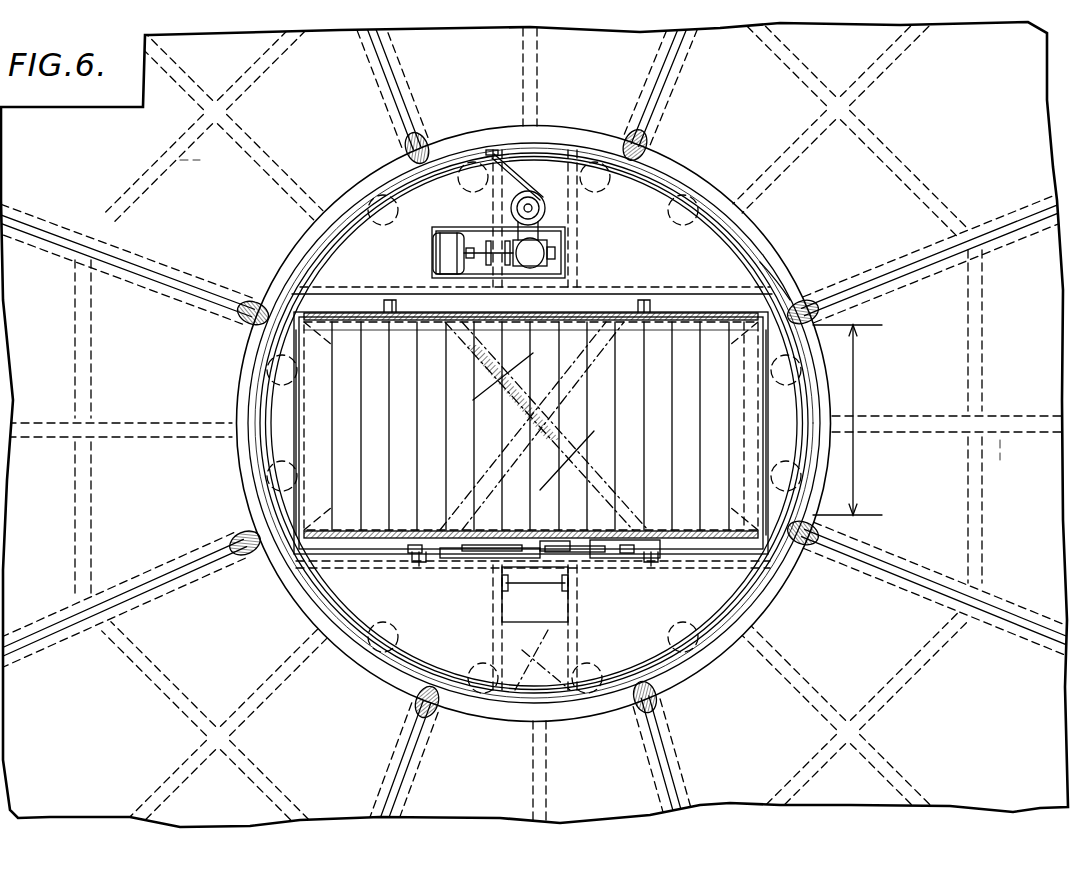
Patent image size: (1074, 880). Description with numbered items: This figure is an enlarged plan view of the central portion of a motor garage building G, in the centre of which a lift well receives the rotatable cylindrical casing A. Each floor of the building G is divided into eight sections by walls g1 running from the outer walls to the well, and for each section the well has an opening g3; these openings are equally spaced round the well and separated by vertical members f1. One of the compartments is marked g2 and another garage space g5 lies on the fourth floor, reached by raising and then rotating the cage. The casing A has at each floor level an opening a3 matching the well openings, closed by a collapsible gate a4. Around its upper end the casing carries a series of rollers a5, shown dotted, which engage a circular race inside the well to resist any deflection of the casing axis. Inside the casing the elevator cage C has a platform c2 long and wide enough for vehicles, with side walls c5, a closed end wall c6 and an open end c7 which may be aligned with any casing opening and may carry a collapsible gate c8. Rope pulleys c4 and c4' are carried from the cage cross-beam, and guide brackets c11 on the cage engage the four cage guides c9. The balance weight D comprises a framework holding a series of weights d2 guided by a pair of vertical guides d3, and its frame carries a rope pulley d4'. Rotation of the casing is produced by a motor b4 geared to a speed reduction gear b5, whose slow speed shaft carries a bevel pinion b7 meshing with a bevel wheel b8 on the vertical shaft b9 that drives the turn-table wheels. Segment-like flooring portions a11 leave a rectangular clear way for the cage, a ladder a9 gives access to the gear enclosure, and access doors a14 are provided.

The casing A is at (716, 630).
The elevator cage C is at (532, 427).
The balance weight D is at (550, 534).
The building G is at (535, 440).
The opening a3 is at (847, 420).
The collapsible gate a4 is at (768, 276).
The rollers a5 is at (458, 190).
The ladder a9 is at (535, 594).
The segment-like flooring portion a11 is at (670, 200).
The access door a14 is at (500, 745).
The motor b4 is at (445, 248).
The speed reduction gear b5 is at (548, 258).
The bevel pinion b7 is at (555, 233).
The bevel wheel b8 is at (511, 208).
The vertical shaft b9 is at (514, 175).
The platform c2 is at (345, 432).
The rope pulley c4 is at (531, 426).
The rope pulley c4' is at (532, 426).
The side walls c5 is at (522, 320).
The end wall c6 is at (300, 412).
The open end c7 is at (780, 418).
The collapsible gate c8 is at (752, 452).
The cage guides c9 is at (393, 310).
The guide brackets c11 is at (390, 322).
The weights d2 is at (556, 556).
The vertical guides d3 is at (415, 562).
The rope pulley d4' is at (555, 530).
The vertical members f1 is at (421, 131).
The walls g1 is at (660, 98).
The compartment g2 is at (1007, 464).
The opening g3 is at (478, 136).
The garage space g5 is at (192, 176).